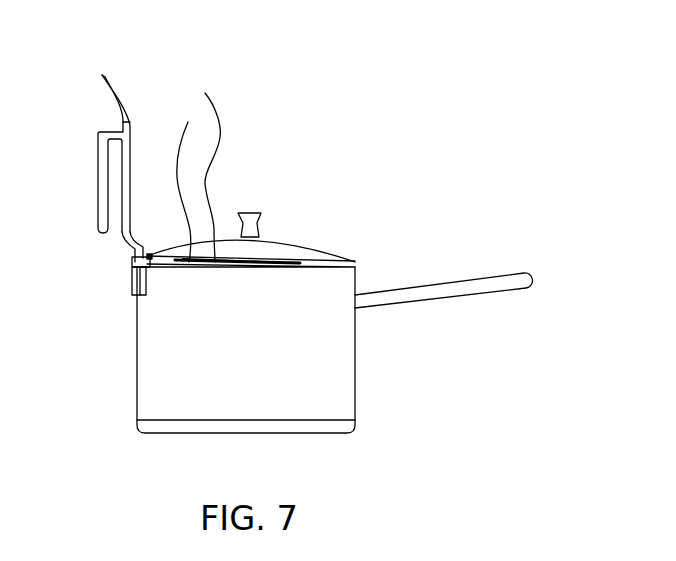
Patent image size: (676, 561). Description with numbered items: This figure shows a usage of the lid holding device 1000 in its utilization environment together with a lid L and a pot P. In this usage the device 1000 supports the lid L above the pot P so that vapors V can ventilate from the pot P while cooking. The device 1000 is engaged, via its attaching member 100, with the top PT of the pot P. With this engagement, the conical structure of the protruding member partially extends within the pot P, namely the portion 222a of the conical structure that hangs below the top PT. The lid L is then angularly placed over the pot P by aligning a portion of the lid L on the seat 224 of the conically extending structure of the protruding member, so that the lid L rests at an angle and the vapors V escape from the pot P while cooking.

The device 1000 is at (118, 78).
The seat 224 is at (148, 229).
The portion of the conical structure 222a is at (157, 272).
The attaching member 100 is at (123, 285).
The vapors V is at (229, 119).
The top of the pot PT is at (245, 261).
The lid L is at (333, 248).
The pot P is at (345, 346).